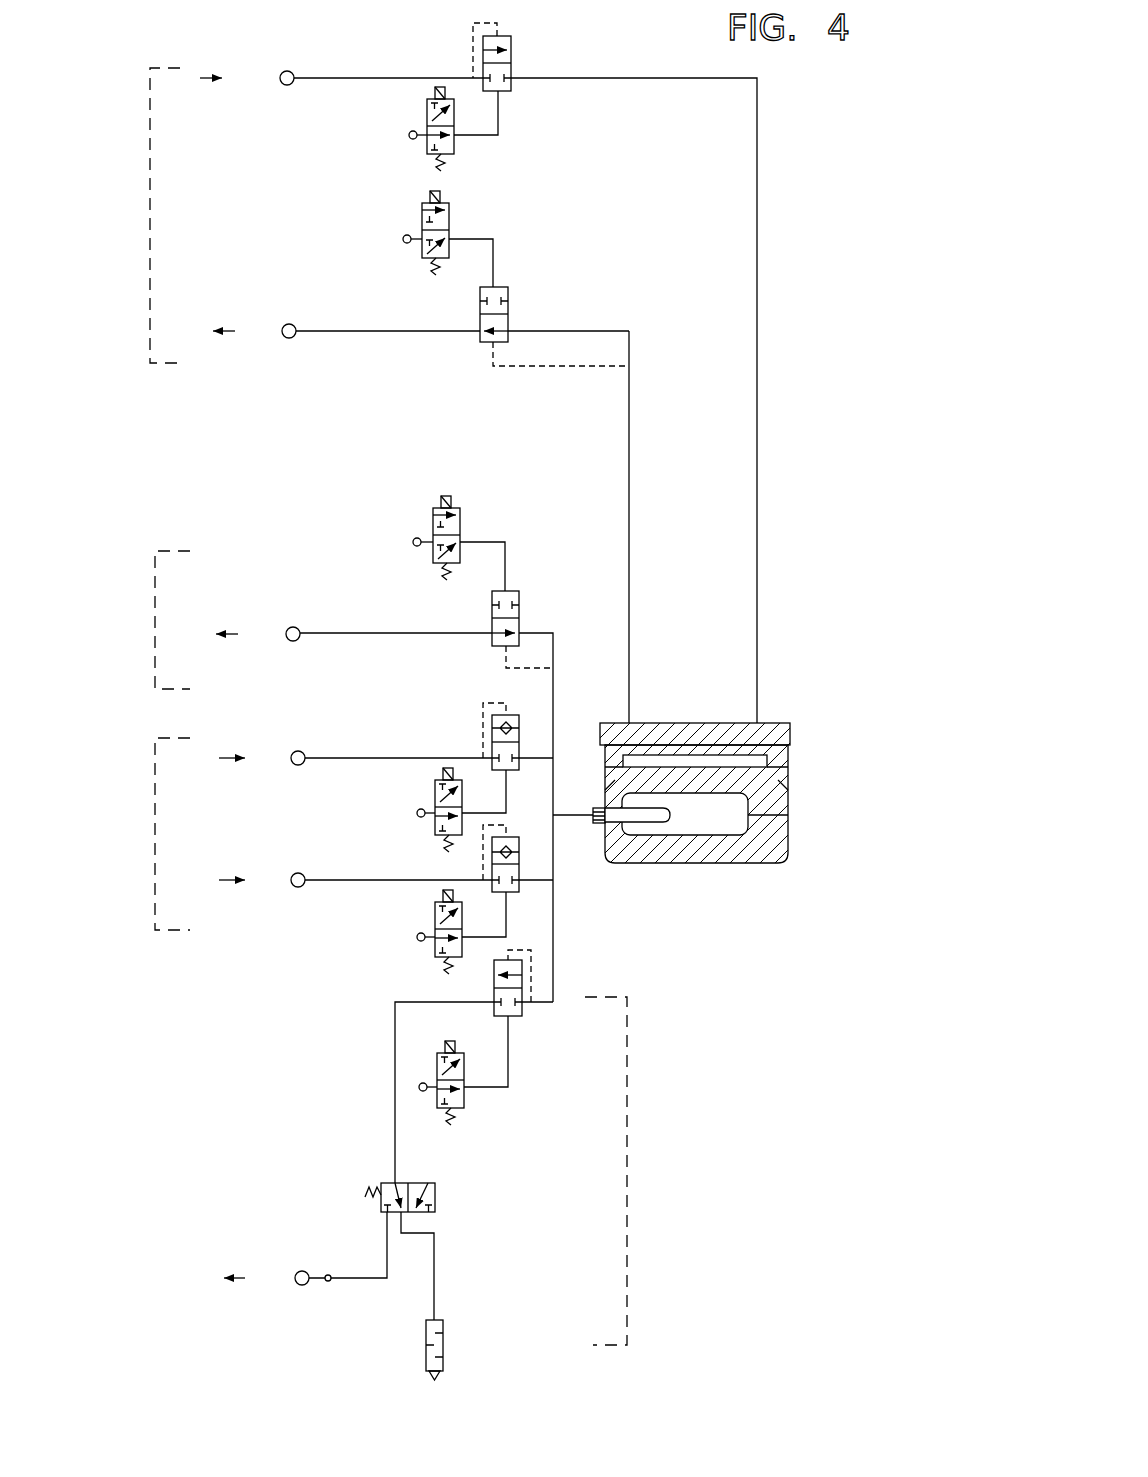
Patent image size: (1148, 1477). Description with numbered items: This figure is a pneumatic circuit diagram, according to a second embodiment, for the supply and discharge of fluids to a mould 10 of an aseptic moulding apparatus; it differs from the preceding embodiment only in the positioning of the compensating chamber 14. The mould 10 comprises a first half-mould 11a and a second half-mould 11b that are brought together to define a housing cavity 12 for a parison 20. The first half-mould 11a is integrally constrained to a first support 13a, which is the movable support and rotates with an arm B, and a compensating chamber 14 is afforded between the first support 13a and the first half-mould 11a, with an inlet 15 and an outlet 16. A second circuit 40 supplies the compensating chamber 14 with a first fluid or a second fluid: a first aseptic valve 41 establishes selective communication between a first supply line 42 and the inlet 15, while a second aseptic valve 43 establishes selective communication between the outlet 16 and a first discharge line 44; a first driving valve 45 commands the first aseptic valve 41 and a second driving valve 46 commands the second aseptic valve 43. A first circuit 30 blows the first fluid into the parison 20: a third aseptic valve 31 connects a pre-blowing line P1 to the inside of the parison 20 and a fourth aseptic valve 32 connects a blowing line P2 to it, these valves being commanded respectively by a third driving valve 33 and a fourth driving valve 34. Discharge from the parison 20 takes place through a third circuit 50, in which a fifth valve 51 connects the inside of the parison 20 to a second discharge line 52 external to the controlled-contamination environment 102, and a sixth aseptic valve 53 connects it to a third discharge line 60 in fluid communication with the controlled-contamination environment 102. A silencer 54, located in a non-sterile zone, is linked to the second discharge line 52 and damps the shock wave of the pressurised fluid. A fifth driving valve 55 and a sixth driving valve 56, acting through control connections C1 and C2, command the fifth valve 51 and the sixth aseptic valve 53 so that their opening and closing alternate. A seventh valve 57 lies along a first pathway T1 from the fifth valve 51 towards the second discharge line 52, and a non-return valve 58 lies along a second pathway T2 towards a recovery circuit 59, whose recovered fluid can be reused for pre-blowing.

The mould 10 is at (812, 835).
The first half-mould 11a is at (768, 805).
The second half-mould 11b is at (768, 858).
The housing cavity 12 is at (723, 815).
The first support 13a is at (787, 757).
The compensating chamber 14 is at (677, 765).
The inlet 15 is at (760, 670).
The outlet 16 is at (631, 678).
The parison 20 is at (663, 825).
The first circuit 30 is at (155, 810).
The third aseptic valve 31 is at (492, 870).
The fourth aseptic valve 32 is at (492, 716).
The third driving valve 33 is at (432, 927).
The fourth driving valve 34 is at (432, 792).
The second circuit 40 is at (150, 228).
The first aseptic valve 41 is at (518, 93).
The first supply line 42 is at (330, 82).
The second aseptic valve 43 is at (512, 283).
The first discharge line 44 is at (373, 333).
The first driving valve 45 is at (416, 148).
The second driving valve 46 is at (415, 247).
The third circuit 50 is at (153, 622).
The fifth valve 51 is at (513, 1018).
The second discharge line 52 is at (438, 1287).
The sixth aseptic valve 53 is at (519, 587).
The silencer 54 is at (445, 1368).
The fifth driving valve 55 is at (462, 1083).
The sixth driving valve 56 is at (450, 502).
The seventh valve 57 is at (425, 1180).
The non-return valve 58 is at (327, 1276).
The recovery circuit 59 is at (297, 1272).
The third discharge line 60 is at (365, 628).
The controlled-contamination environment 102 is at (290, 628).
The arm B is at (797, 718).
The control line C1 is at (508, 1067).
The control line C2 is at (485, 538).
The pre-blowing line P1 is at (297, 875).
The blowing line P2 is at (281, 72).
The first pathway T1 is at (388, 1122).
The second pathway T2 is at (363, 1279).